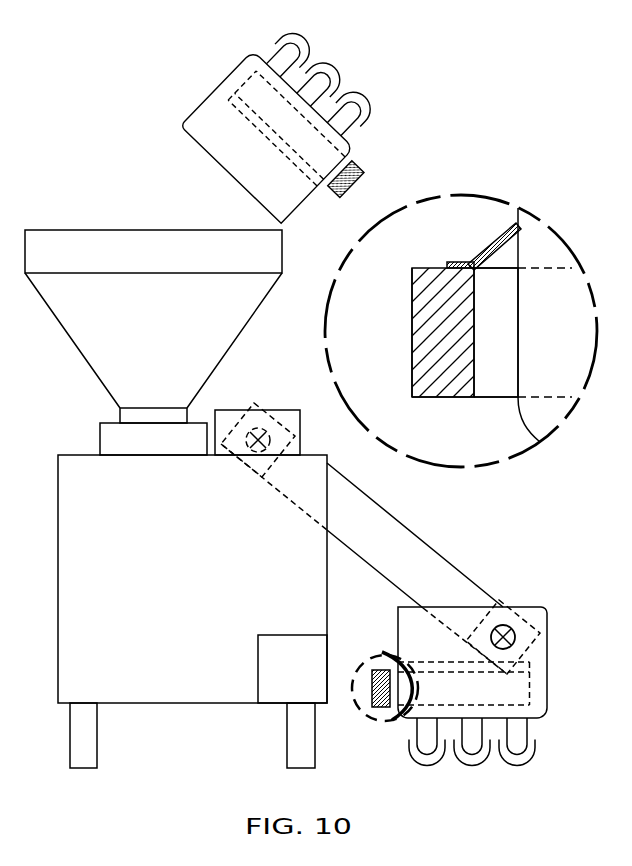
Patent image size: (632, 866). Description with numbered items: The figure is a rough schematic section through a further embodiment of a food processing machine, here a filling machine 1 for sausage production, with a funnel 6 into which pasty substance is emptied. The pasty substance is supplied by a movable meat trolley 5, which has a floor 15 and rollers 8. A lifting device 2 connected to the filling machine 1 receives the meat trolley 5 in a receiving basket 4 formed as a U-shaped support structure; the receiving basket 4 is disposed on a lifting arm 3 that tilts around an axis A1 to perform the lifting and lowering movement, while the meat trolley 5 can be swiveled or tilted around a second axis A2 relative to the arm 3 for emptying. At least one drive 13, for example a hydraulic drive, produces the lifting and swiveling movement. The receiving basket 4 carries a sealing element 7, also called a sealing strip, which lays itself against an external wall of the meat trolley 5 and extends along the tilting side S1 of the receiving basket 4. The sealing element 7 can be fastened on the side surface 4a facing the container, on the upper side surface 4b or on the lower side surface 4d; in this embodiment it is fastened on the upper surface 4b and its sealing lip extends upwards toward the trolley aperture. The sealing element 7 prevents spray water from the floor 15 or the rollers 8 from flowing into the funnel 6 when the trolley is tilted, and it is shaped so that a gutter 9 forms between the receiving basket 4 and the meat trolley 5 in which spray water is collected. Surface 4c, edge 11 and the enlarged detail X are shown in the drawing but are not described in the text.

The filling machine 1 is at (80, 214).
The lifting device 2 is at (432, 551).
The lifting arm 3 is at (396, 559).
The receiving basket 4 is at (389, 711).
The side surface facing the meat trolley 4a is at (476, 337).
The upper side surface 4b is at (426, 267).
The rear side of separating element 4c is at (411, 337).
The lower side surface 4d is at (457, 398).
The meat trolley 5 is at (232, 170).
The funnel 6 is at (70, 339).
The sealing element 7 is at (396, 651).
The rollers 8 is at (430, 767).
The gutter 9 is at (503, 310).
The cutting edge 11 is at (521, 232).
The drive 13 is at (308, 686).
The floor 15 is at (496, 720).
The axis A1 is at (259, 414).
The axis A2 is at (503, 625).
The tilting side S1 is at (306, 204).
The detail X is at (388, 654).